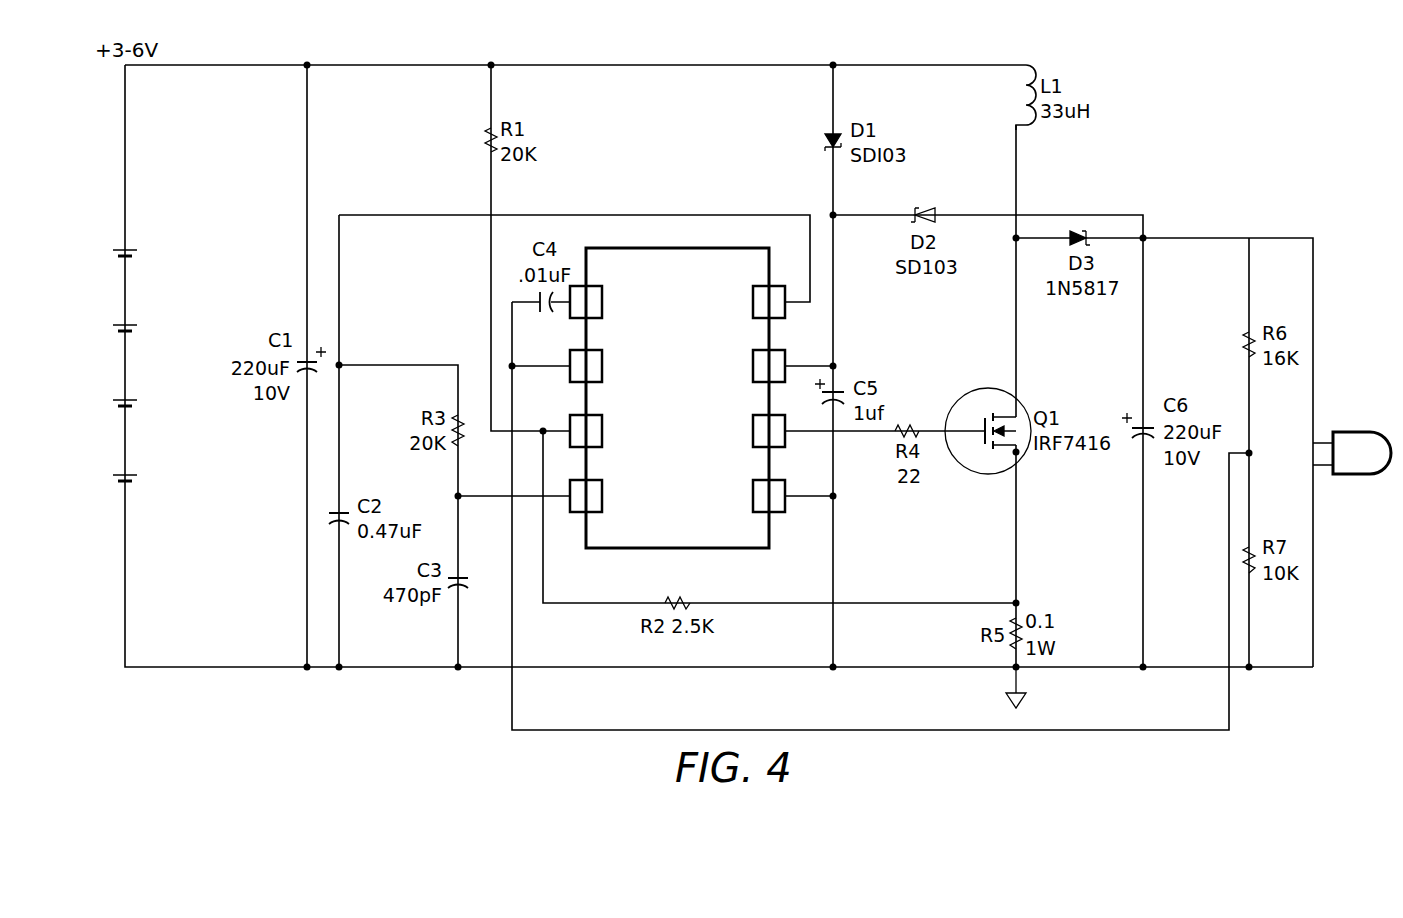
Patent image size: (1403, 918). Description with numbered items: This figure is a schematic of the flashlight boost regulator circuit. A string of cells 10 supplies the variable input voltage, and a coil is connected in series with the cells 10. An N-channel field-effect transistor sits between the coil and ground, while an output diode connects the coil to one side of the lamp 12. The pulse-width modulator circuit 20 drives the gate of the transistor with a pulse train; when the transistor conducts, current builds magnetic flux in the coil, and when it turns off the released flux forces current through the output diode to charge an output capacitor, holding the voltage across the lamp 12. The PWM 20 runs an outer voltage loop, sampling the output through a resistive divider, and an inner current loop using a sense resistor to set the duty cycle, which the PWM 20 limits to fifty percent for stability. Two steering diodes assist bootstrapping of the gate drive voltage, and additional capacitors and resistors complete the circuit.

The cells 10 is at (110, 250).
The lamp 12 is at (1354, 431).
The pulse-width modulator (PWM) circuit 20 is at (769, 535).